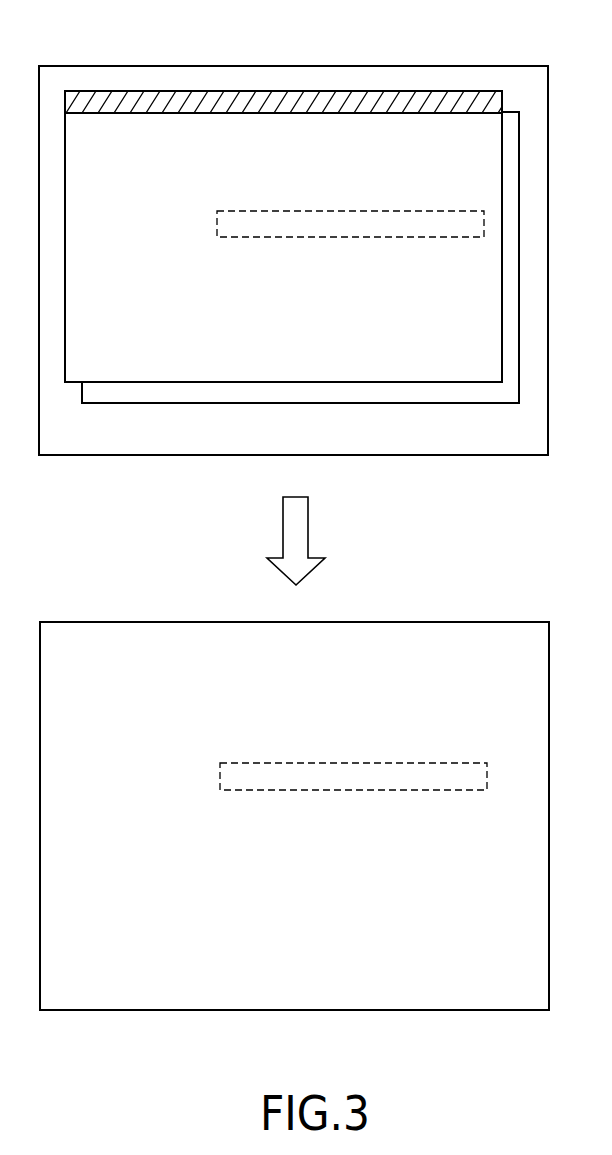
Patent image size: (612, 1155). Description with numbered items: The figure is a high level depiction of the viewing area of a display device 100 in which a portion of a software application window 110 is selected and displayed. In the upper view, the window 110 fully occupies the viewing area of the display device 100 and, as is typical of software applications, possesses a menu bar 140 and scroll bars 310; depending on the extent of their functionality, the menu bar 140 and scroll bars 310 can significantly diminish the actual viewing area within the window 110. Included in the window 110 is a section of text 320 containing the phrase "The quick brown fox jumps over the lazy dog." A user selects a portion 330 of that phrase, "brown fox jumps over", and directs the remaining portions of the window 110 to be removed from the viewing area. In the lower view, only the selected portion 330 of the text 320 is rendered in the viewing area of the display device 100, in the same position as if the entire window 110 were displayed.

The display device 100 is at (471, 66).
The software application window 110 is at (308, 357).
The menu bar 140 is at (135, 113).
The scroll bars 310 is at (432, 403).
The section of text 320 is at (146, 261).
The selected portion 330 is at (394, 210).